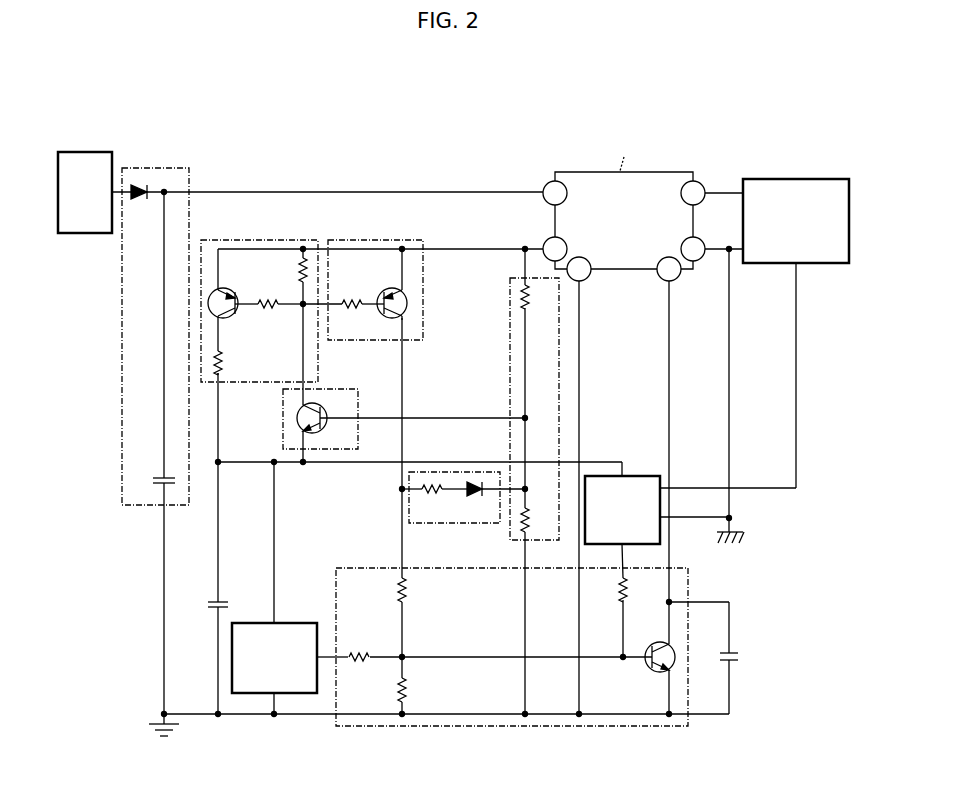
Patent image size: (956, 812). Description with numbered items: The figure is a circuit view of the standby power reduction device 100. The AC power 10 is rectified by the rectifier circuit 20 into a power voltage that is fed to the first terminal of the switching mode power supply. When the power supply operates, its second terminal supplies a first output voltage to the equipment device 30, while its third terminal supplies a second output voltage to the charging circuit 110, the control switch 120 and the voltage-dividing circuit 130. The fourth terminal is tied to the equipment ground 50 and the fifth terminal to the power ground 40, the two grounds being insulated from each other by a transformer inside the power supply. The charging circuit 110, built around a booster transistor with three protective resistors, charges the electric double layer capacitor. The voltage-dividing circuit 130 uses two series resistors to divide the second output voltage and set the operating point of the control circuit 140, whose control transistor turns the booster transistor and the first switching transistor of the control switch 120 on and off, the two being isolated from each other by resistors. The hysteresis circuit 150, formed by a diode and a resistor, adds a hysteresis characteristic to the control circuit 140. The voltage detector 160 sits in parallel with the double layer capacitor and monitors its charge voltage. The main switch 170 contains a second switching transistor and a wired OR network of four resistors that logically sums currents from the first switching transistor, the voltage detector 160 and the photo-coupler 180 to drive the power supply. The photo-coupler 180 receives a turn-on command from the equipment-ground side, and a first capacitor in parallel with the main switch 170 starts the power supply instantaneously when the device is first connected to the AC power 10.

The standby power reduction device 100 is at (45, 91).
The AC power 10 is at (85, 150).
The rectifier circuit 20 is at (150, 167).
The equipment device 30 is at (795, 178).
The power ground 40 is at (150, 729).
The equipment ground 50 is at (745, 533).
The charging circuit 110 is at (257, 239).
The control switch 120 is at (378, 239).
The voltage-dividing circuit 130 is at (509, 306).
The control circuit 140 is at (345, 388).
The hysteresis circuit 150 is at (455, 525).
The voltage detector 160 is at (250, 622).
The main switch 170 is at (510, 728).
The photo-coupler 180 is at (638, 474).